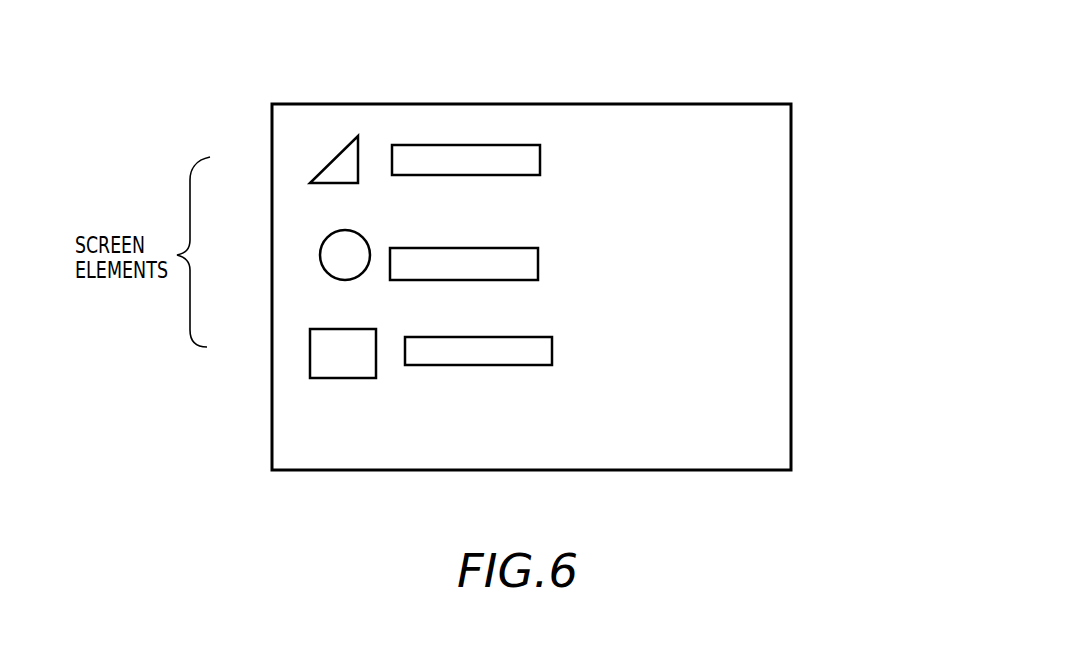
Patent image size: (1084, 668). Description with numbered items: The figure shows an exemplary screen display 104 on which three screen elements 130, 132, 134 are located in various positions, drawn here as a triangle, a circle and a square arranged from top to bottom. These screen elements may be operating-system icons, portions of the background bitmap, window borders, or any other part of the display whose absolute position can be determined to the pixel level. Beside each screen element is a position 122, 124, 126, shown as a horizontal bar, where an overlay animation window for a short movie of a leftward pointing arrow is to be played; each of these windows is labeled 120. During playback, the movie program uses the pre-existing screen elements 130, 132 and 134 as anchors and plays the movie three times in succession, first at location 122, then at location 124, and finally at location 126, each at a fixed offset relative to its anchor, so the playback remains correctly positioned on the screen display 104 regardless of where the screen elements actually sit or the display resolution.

The screen display 104 is at (770, 228).
The screen element bars 120 is at (498, 238).
The first position 122 is at (532, 167).
The second position 124 is at (538, 268).
The third position 126 is at (537, 358).
The screen element 130 is at (327, 166).
The screen element 132 is at (321, 255).
The screen element 134 is at (310, 350).